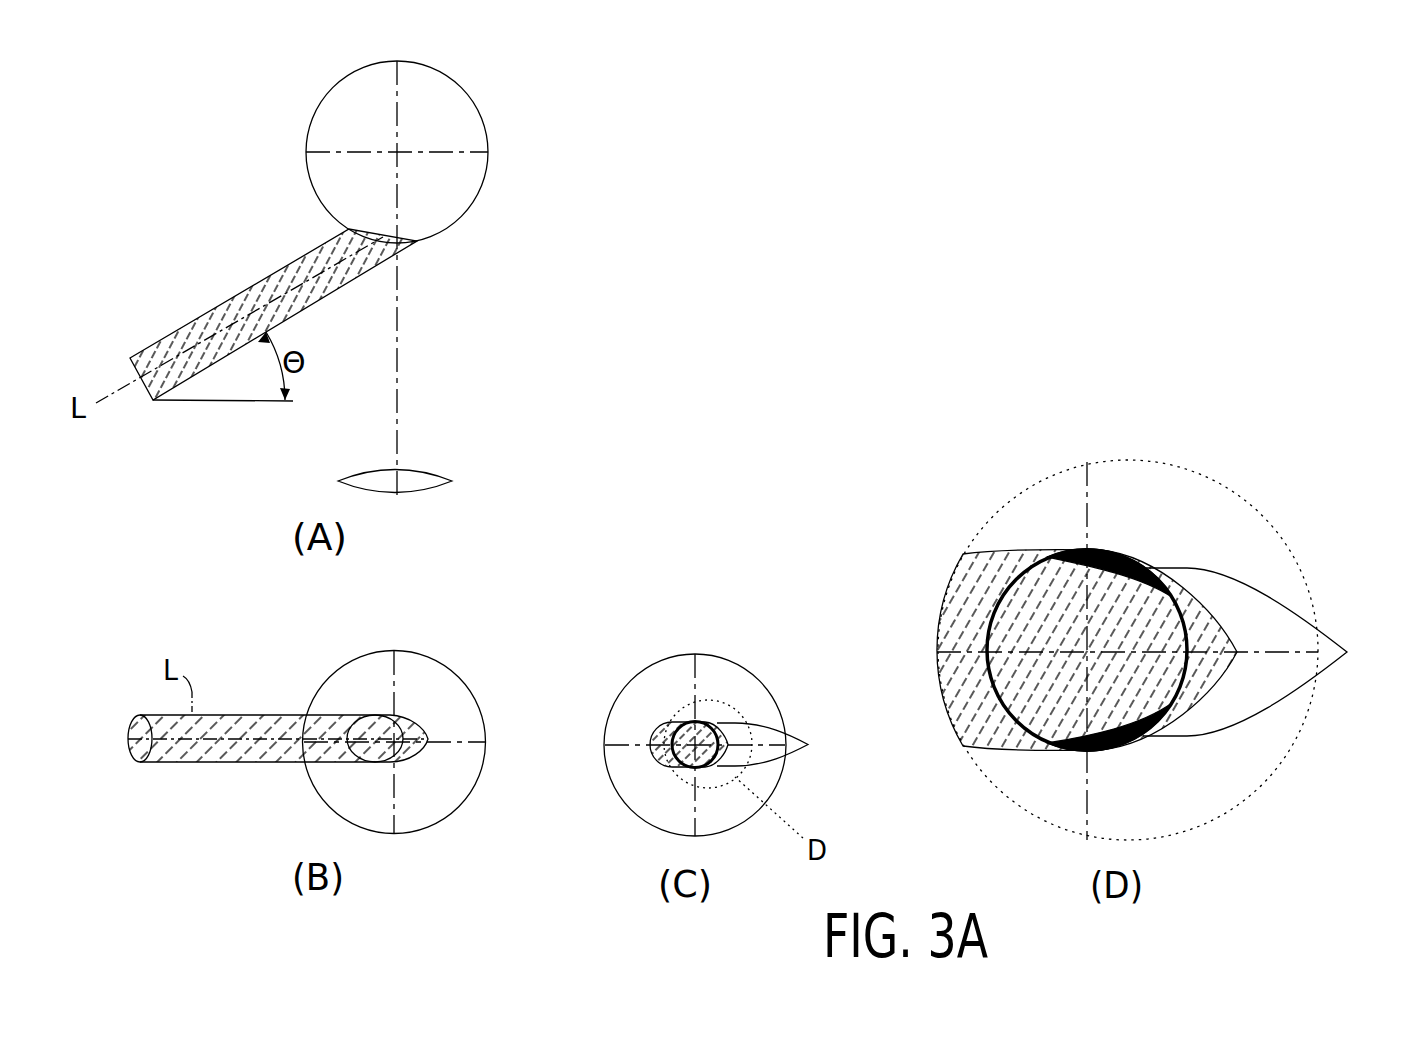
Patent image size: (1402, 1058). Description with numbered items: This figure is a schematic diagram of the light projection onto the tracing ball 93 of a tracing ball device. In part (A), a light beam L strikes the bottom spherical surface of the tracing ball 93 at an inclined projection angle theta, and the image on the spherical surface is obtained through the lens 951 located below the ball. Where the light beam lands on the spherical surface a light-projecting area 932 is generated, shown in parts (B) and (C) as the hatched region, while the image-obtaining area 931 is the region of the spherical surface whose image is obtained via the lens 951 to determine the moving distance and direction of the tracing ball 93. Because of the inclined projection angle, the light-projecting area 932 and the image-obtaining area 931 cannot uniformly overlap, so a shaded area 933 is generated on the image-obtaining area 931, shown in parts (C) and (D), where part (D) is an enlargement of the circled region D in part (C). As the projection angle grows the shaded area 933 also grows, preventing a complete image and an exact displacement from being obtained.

The tracing ball 93 is at (485, 126).
The lens 951 is at (430, 470).
The image-obtaining area 931 is at (663, 766).
The light-projecting area 932 is at (405, 717).
The shaded area 933 is at (808, 744).